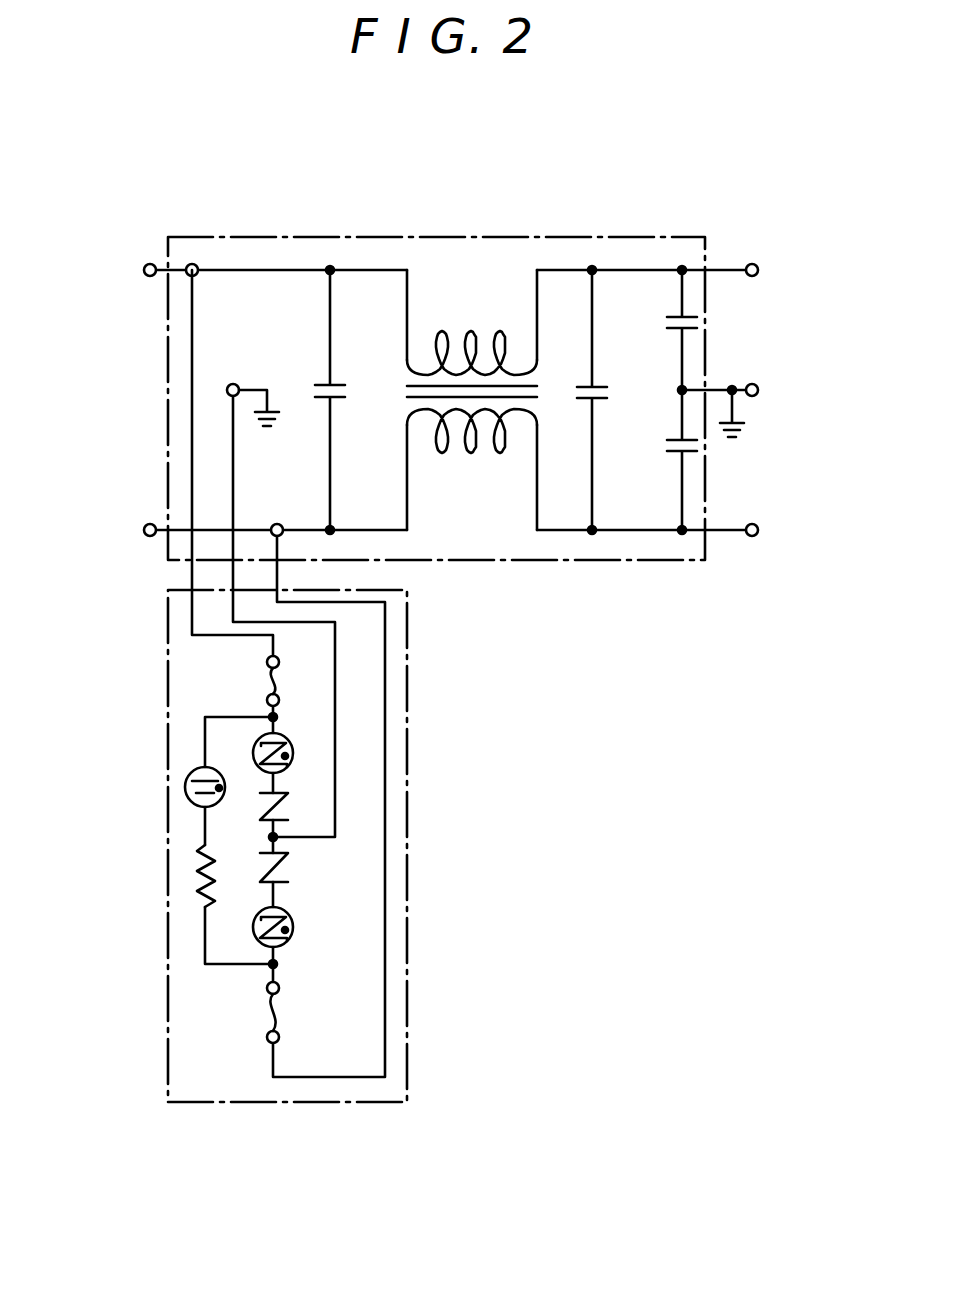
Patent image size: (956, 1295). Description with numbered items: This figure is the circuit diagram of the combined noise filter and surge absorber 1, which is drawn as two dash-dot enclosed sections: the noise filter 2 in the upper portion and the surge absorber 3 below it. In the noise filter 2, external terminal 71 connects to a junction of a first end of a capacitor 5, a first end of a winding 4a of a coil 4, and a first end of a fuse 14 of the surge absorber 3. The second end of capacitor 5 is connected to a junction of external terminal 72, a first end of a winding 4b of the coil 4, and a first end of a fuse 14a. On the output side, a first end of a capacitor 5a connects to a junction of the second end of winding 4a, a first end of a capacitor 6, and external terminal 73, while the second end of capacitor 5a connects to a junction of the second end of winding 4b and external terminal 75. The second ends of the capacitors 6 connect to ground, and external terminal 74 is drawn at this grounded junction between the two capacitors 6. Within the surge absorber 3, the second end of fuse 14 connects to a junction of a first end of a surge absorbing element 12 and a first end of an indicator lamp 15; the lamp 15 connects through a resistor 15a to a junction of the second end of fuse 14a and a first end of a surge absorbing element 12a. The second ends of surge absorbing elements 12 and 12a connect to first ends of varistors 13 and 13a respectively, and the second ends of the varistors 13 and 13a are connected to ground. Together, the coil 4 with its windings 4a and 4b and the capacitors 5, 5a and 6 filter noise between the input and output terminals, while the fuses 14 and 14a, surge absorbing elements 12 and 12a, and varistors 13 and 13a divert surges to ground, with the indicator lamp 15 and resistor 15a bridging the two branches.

The combined noise filter and surge absorber 1 is at (627, 166).
The noise filter 2 is at (285, 237).
The surge absorber 3 is at (407, 645).
The coil 4 is at (450, 350).
The winding 4a is at (508, 312).
The winding 4b is at (493, 458).
The capacitor 5 is at (320, 385).
The capacitor 5a is at (613, 387).
The capacitor 6 is at (700, 322).
The external terminal 71 is at (140, 272).
The external terminal 72 is at (140, 532).
The external terminal 73 is at (760, 270).
The external terminal 74 is at (760, 390).
The external terminal 75 is at (760, 530).
The surge absorbing element 12 is at (290, 752).
The surge absorbing element 12a is at (290, 930).
The varistor 13 is at (290, 808).
The varistor 13a is at (290, 873).
The fuse 14 is at (268, 682).
The fuse 14a is at (268, 1002).
The indicator lamp 15 is at (185, 783).
The resistor 15a is at (203, 872).